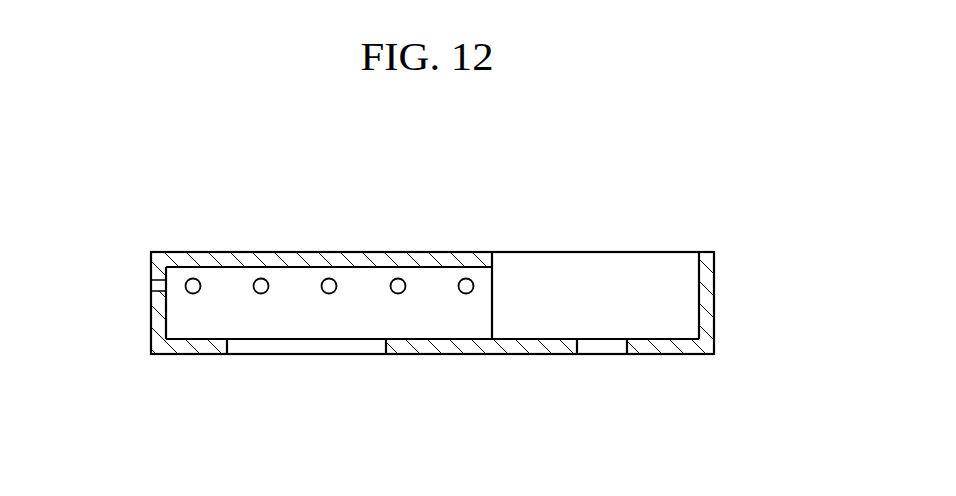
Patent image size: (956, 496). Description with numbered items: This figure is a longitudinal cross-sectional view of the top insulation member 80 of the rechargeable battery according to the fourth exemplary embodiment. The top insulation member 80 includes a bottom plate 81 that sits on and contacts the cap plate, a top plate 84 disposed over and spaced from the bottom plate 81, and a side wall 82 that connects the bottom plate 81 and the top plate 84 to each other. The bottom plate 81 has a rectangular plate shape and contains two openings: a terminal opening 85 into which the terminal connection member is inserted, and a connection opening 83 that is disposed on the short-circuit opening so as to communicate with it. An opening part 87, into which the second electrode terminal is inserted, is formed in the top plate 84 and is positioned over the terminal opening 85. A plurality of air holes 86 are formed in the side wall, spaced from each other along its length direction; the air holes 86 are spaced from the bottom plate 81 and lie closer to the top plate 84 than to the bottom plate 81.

The top insulation member 80 is at (603, 214).
The bottom plate 81 is at (673, 347).
The side wall 82 is at (715, 293).
The connection opening 83 is at (302, 355).
The top plate 84 is at (408, 252).
The terminal opening 85 is at (600, 355).
The air holes 86 is at (193, 278).
The opening part 87 is at (667, 252).